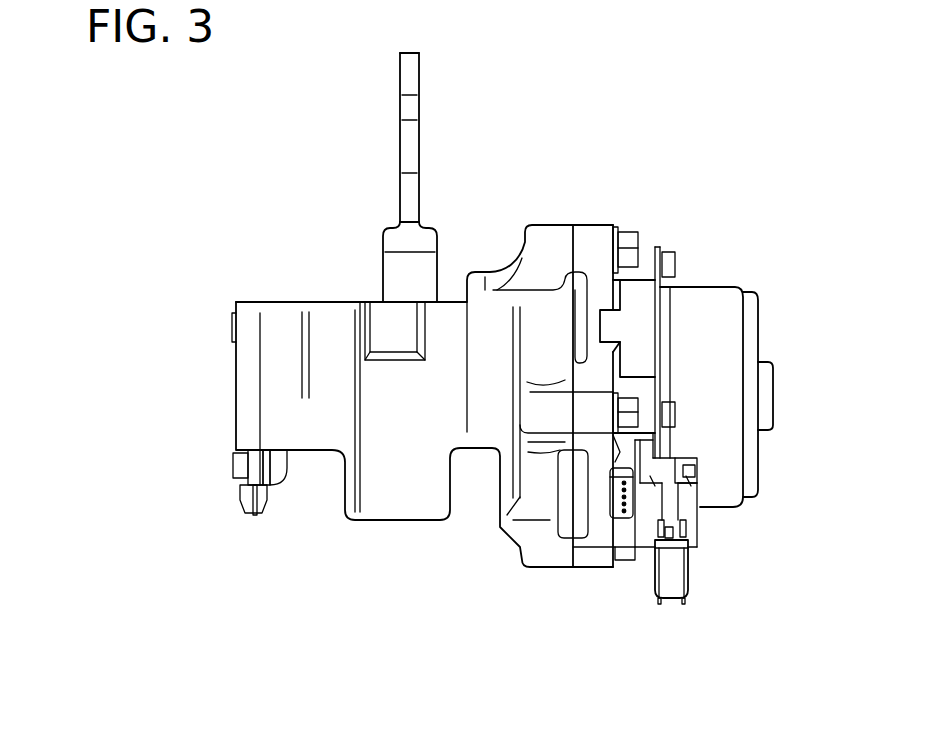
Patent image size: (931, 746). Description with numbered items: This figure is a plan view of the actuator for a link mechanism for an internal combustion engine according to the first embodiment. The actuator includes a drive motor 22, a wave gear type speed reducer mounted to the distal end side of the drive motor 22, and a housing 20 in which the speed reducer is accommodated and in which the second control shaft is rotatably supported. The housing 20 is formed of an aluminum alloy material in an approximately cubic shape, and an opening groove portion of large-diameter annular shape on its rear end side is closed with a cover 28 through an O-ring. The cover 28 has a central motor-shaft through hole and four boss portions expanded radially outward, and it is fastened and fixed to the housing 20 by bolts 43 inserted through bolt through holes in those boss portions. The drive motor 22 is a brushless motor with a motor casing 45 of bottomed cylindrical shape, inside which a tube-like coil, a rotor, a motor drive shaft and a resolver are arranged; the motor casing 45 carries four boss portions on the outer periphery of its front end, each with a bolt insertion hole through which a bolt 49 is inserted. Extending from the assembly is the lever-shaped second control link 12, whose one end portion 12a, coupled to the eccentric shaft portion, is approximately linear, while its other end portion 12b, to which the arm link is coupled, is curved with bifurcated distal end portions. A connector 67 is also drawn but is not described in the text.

The second control link 12 is at (402, 133).
The one end portion 12a is at (407, 75).
The other end portion 12b is at (400, 242).
The housing 20 is at (236, 374).
The cover 28 is at (597, 223).
The bolt 43 is at (627, 236).
The bolt 49 is at (668, 252).
The drive motor 22 is at (733, 382).
The motor casing 45 is at (726, 323).
The connector 67 is at (690, 565).